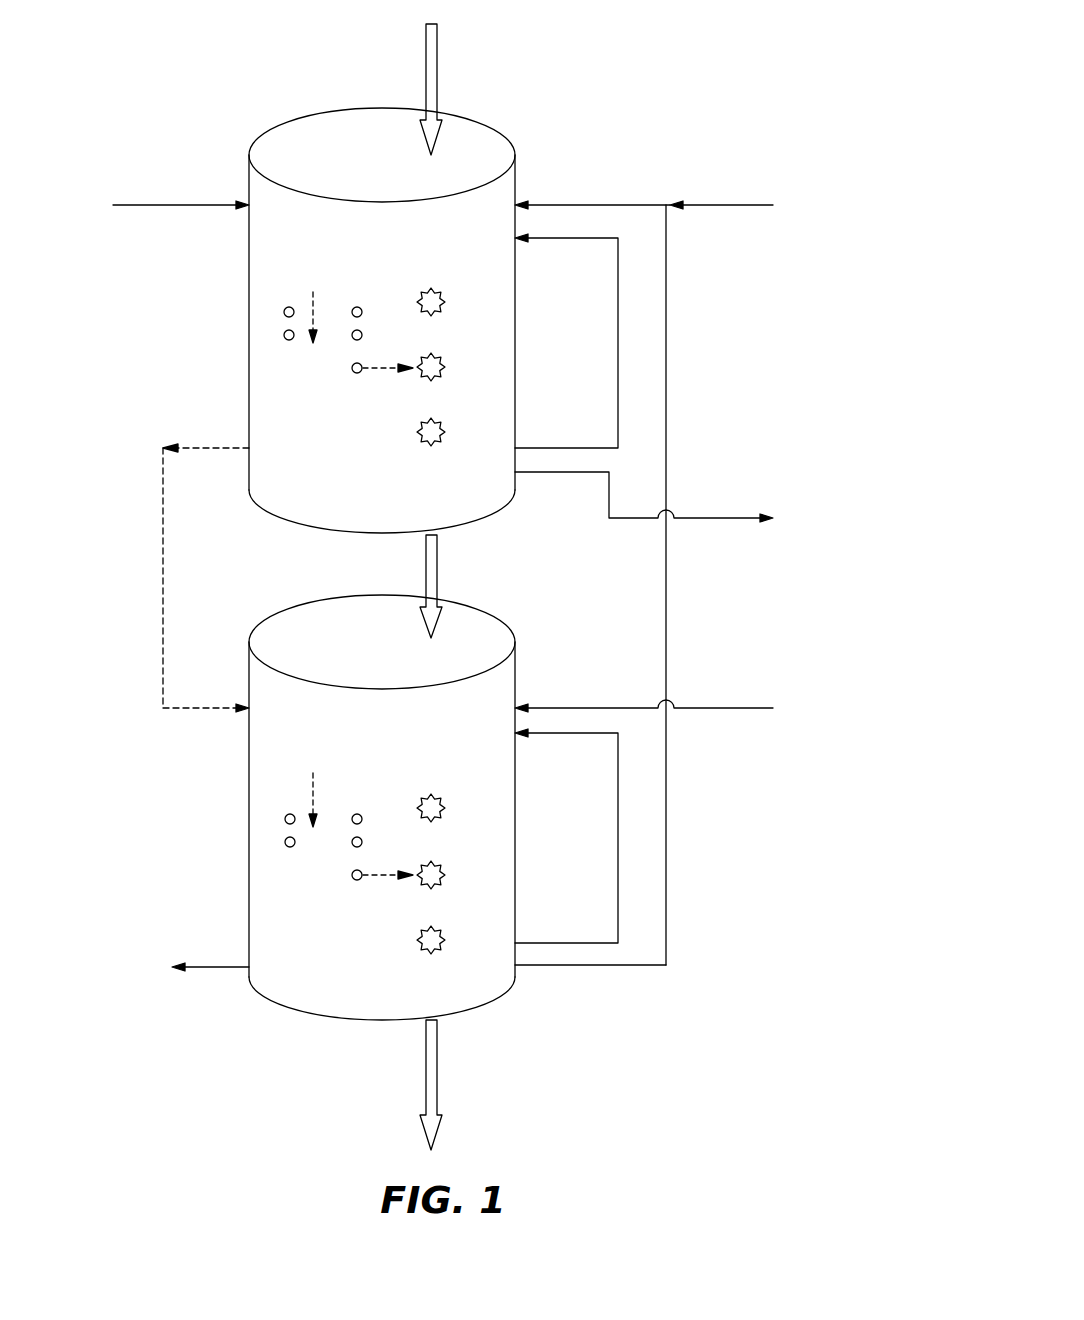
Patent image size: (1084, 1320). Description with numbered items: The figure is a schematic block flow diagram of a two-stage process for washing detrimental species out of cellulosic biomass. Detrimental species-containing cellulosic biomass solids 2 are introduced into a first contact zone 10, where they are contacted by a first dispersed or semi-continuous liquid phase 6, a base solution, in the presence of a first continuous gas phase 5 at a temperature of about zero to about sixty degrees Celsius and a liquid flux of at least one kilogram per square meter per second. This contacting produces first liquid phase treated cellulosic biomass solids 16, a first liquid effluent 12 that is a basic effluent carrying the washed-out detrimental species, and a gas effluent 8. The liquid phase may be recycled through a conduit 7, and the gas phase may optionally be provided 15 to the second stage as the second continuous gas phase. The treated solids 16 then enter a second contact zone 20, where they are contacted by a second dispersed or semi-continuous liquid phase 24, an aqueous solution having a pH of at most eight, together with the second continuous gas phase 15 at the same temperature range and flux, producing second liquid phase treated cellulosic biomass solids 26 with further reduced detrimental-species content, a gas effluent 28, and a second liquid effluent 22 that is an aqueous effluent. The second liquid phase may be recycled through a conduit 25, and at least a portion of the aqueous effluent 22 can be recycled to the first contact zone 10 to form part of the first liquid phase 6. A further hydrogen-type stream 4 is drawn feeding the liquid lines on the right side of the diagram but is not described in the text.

The detrimental species-containing cellulosic biomass solids 2 is at (437, 72).
The hydrogen stream 4 is at (720, 205).
The first continuous gas phase 5 is at (153, 205).
The first dispersed or semi-continuous liquid phase 6 is at (600, 205).
The conduit 7 is at (618, 348).
The gas effluent 8 is at (205, 448).
The first contact zone 10 is at (368, 264).
The first liquid effluent 12 is at (723, 518).
The second continuous gas phase 15 is at (210, 708).
The first dispersed or semi-continuous liquid phase treated cellulosic biomass solid 16 is at (437, 560).
The second contact zone 20 is at (367, 749).
The second liquid effluent 22 is at (666, 370).
The second dispersed or semi-continuous liquid phase 24 is at (735, 708).
The conduit 25 is at (618, 853).
The second dispersed or semi-continuous liquid phase treated cellulosic biomass soli 26 is at (437, 1083).
The gas effluent 28 is at (205, 967).